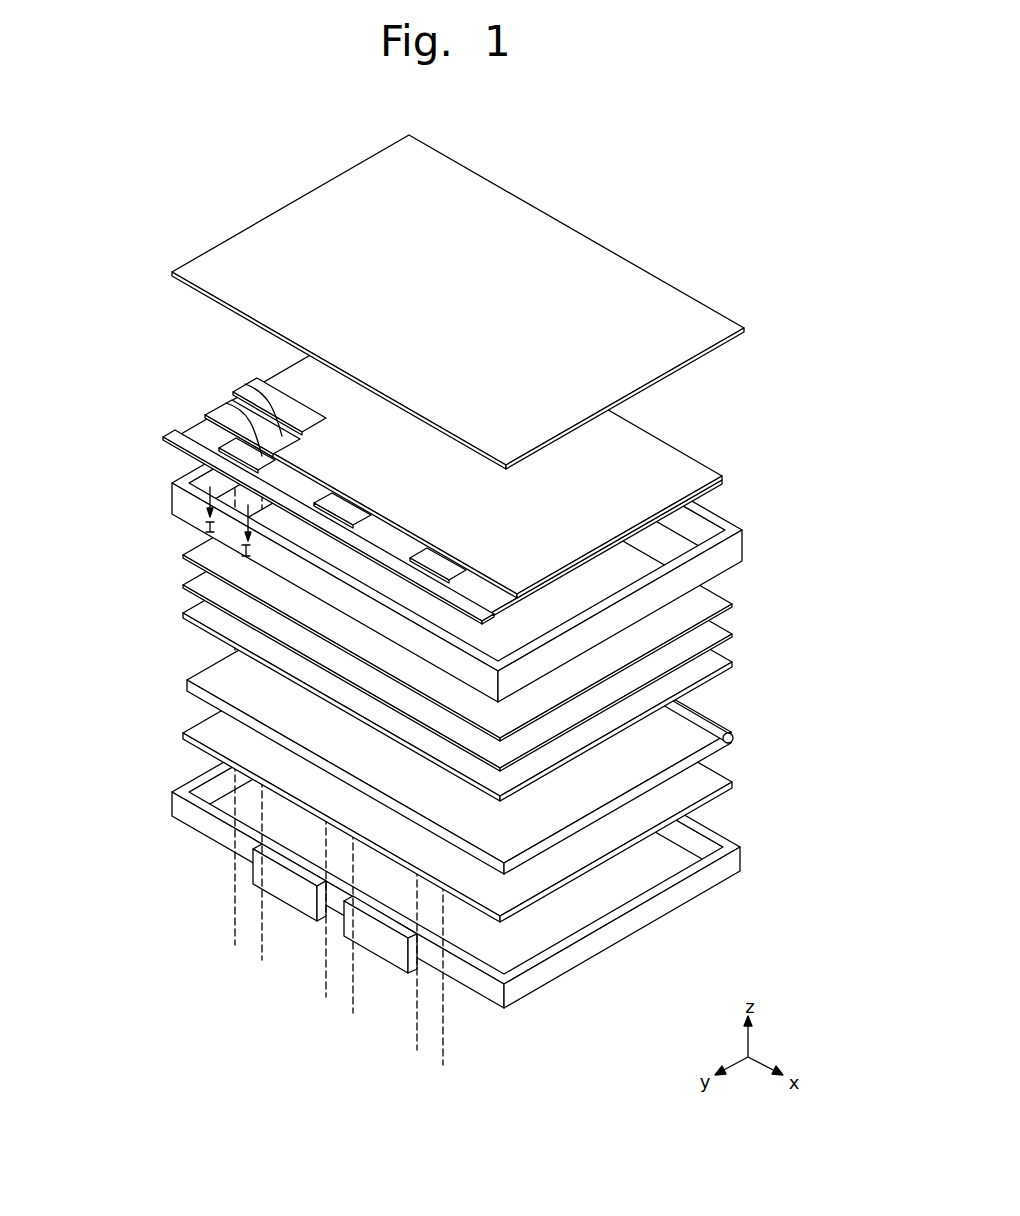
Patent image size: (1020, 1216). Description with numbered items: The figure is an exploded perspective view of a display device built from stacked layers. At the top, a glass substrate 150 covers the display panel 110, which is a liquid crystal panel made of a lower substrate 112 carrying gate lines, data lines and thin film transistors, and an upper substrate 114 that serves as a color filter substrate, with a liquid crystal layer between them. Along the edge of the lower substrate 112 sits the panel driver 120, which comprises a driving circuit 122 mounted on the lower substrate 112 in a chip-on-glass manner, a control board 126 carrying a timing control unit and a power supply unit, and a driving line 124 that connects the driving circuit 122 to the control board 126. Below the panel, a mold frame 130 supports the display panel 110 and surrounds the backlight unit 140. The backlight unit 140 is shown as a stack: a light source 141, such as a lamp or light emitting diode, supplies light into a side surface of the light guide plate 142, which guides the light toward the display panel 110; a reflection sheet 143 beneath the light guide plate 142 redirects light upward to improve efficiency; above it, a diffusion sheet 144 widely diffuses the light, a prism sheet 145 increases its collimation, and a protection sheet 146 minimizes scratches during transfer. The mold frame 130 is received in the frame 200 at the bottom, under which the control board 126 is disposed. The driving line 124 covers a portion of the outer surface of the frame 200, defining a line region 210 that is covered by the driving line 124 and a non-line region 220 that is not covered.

The display panel 110 is at (528, 456).
The lower substrate 112 is at (722, 479).
The upper substrate 114 is at (722, 472).
The panel driver 120 is at (267, 492).
The driving circuit 122 is at (243, 392).
The driving line 124 is at (230, 401).
The control board 126 is at (173, 431).
The mold frame 130 is at (747, 552).
The backlight unit 140 is at (529, 671).
The light source 141 is at (734, 740).
The light guide plate 142 is at (705, 753).
The reflection sheet 143 is at (732, 786).
The diffusion sheet 144 is at (732, 665).
The prism sheet 145 is at (732, 636).
The protection sheet 146 is at (500, 581).
The glass substrate 150 is at (648, 283).
The frame 200 is at (494, 777).
The line region 210 is at (335, 777).
The non-line region 220 is at (262, 950).